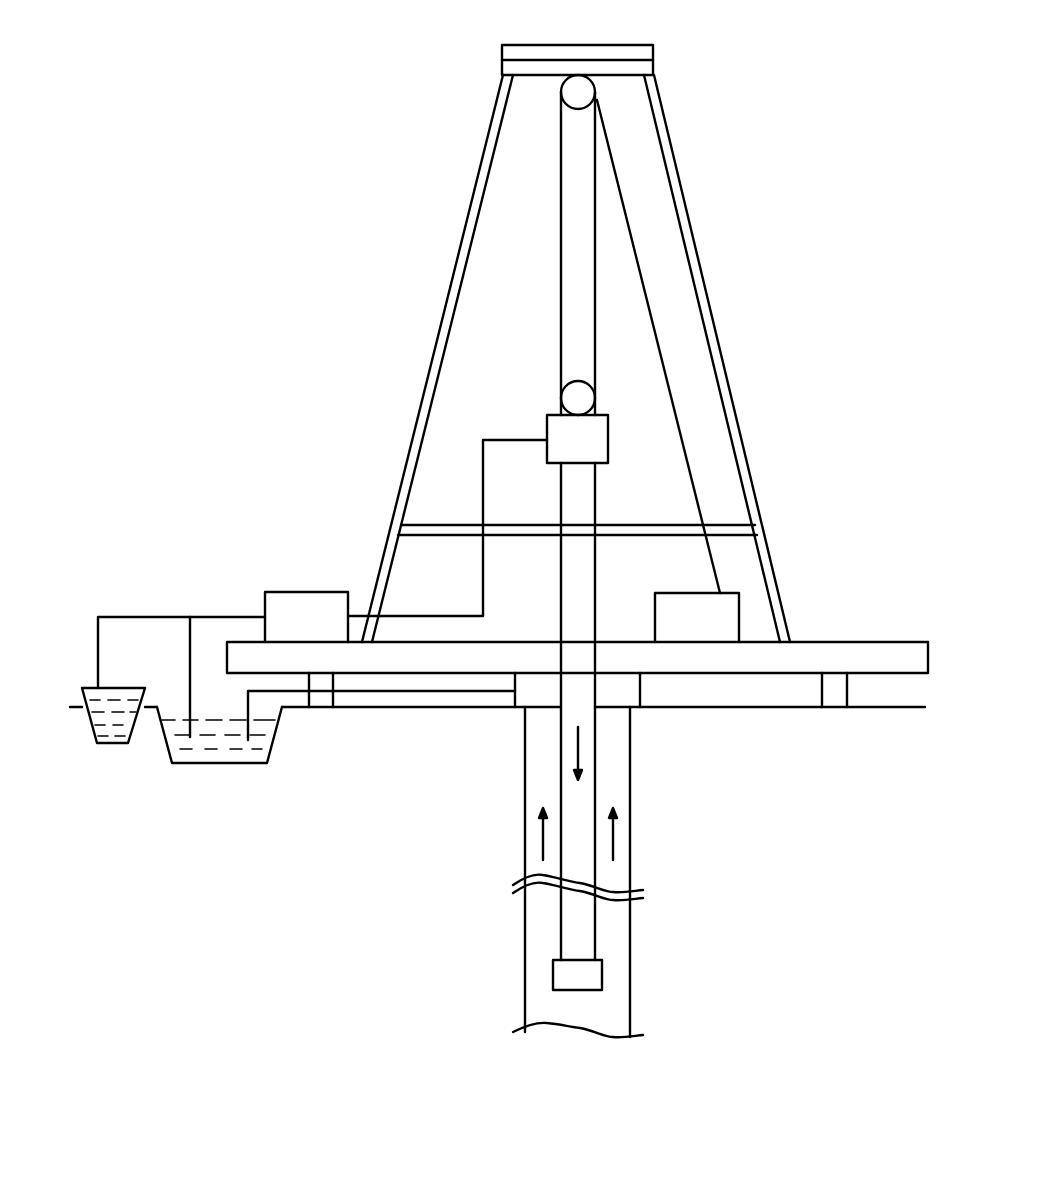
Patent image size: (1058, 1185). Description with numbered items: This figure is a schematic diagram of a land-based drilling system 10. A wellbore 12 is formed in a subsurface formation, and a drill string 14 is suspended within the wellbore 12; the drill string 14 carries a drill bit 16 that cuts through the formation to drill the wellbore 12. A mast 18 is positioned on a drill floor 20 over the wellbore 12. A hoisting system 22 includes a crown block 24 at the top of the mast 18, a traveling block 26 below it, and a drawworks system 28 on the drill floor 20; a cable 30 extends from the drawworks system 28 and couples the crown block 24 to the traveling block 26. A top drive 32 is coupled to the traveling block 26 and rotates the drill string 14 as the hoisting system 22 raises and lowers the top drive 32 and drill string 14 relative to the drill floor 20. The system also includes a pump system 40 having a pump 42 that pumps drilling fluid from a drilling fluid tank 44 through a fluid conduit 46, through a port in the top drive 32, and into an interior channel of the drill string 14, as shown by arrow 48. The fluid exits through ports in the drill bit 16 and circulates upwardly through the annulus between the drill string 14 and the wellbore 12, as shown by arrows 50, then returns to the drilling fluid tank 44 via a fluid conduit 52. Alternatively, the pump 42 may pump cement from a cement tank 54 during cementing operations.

The drilling system 10 is at (730, 66).
The wellbore 12 is at (632, 728).
The drill string 14 is at (597, 800).
The drill bit 16 is at (602, 975).
The mast 18 is at (722, 358).
The drill floor 20 is at (866, 641).
The hoisting system 22 is at (540, 296).
The crown block 24 is at (578, 92).
The traveling block 26 is at (578, 400).
The drawworks system 28 is at (697, 592).
The cable 30 is at (623, 197).
The top drive 32 is at (590, 440).
The pump system 40 is at (235, 565).
The pump 42 is at (302, 592).
The drilling fluid tank 44 is at (218, 763).
The fluid conduit 46 is at (484, 573).
The arrow 48 is at (577, 748).
The arrows 50 is at (543, 837).
The fluid conduit 52 is at (380, 691).
The cement tank 54 is at (122, 692).